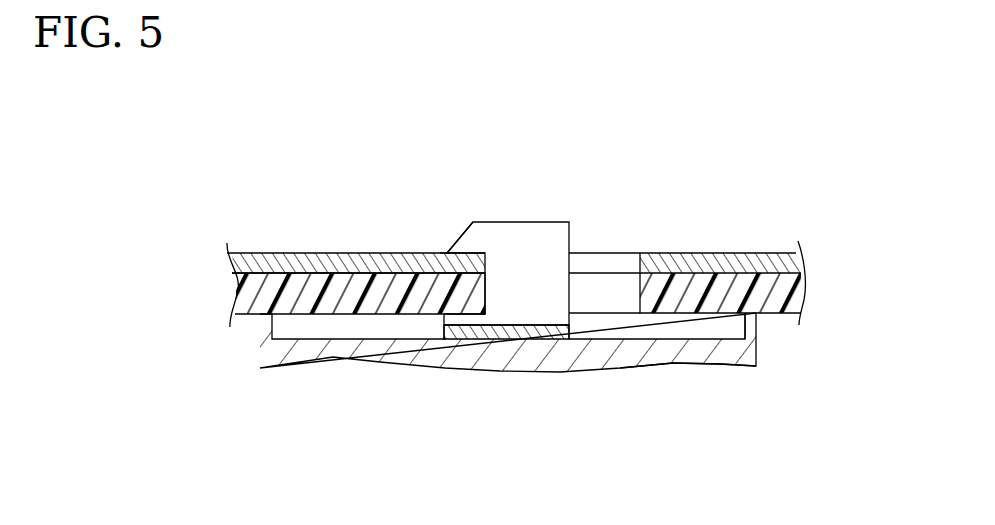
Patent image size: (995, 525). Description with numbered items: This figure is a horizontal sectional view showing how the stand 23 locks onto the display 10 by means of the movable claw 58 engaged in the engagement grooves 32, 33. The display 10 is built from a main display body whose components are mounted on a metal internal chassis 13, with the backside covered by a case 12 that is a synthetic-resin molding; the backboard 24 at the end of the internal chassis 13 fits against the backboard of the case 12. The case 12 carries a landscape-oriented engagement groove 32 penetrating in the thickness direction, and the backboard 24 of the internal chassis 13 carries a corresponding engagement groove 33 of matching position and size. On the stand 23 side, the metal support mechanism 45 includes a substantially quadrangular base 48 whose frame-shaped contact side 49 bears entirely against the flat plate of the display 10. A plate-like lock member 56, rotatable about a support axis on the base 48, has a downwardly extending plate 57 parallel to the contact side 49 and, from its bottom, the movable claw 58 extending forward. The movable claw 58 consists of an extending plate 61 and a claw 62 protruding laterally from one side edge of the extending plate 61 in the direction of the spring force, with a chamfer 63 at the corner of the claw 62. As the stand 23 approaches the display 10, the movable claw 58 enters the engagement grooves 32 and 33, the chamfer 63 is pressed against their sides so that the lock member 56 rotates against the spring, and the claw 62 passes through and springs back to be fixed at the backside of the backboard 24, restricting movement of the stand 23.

The display 10 is at (247, 315).
The case 12 is at (777, 316).
The internal chassis 13 is at (752, 252).
The stand 23 is at (332, 357).
The backboard 24 is at (700, 253).
The engagement groove 32 is at (640, 293).
The engagement groove 33 is at (640, 262).
The support mechanism 45 is at (717, 365).
The base 48 is at (672, 353).
The contact side 49 is at (266, 313).
The lock member 56 is at (441, 330).
The downwardly extending plate 57 is at (540, 338).
The movable claw 58 is at (536, 222).
The extending plate 61 is at (525, 292).
The claw 62 is at (450, 246).
The chamfer 63 is at (446, 251).